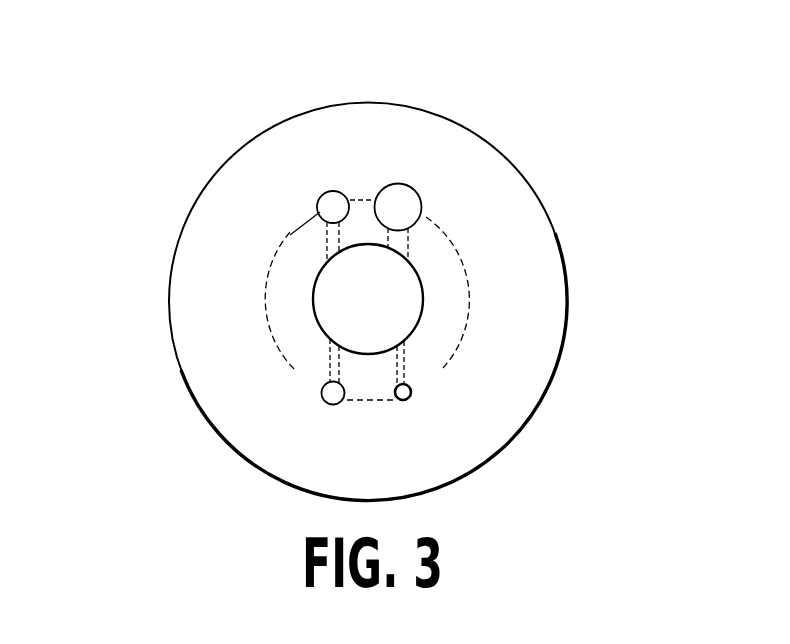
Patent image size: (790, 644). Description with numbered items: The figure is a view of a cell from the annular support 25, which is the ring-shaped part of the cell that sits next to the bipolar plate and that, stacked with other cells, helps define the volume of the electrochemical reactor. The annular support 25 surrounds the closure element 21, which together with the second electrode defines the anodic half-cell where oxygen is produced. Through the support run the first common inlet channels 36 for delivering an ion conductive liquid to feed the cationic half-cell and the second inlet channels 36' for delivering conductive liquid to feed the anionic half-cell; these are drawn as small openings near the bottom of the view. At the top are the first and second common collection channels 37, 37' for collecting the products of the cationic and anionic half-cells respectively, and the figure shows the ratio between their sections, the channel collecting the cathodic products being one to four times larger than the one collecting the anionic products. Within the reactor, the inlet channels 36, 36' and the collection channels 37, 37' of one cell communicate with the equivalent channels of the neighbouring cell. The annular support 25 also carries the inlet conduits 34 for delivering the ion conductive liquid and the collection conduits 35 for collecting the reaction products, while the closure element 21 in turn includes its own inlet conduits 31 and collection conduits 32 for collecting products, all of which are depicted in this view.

The closure element 21 is at (288, 280).
The annular support 25 is at (517, 410).
The inlet conduits 31 is at (332, 367).
The collection conduits 32 is at (407, 243).
The inlet conduits 34 is at (403, 368).
The collection conduits 35 is at (297, 226).
The first common inlet channels 36 is at (492, 454).
The second inlet channels 36' is at (250, 446).
The first common collection channels 37 is at (258, 141).
The second common collection channels 37' is at (487, 144).